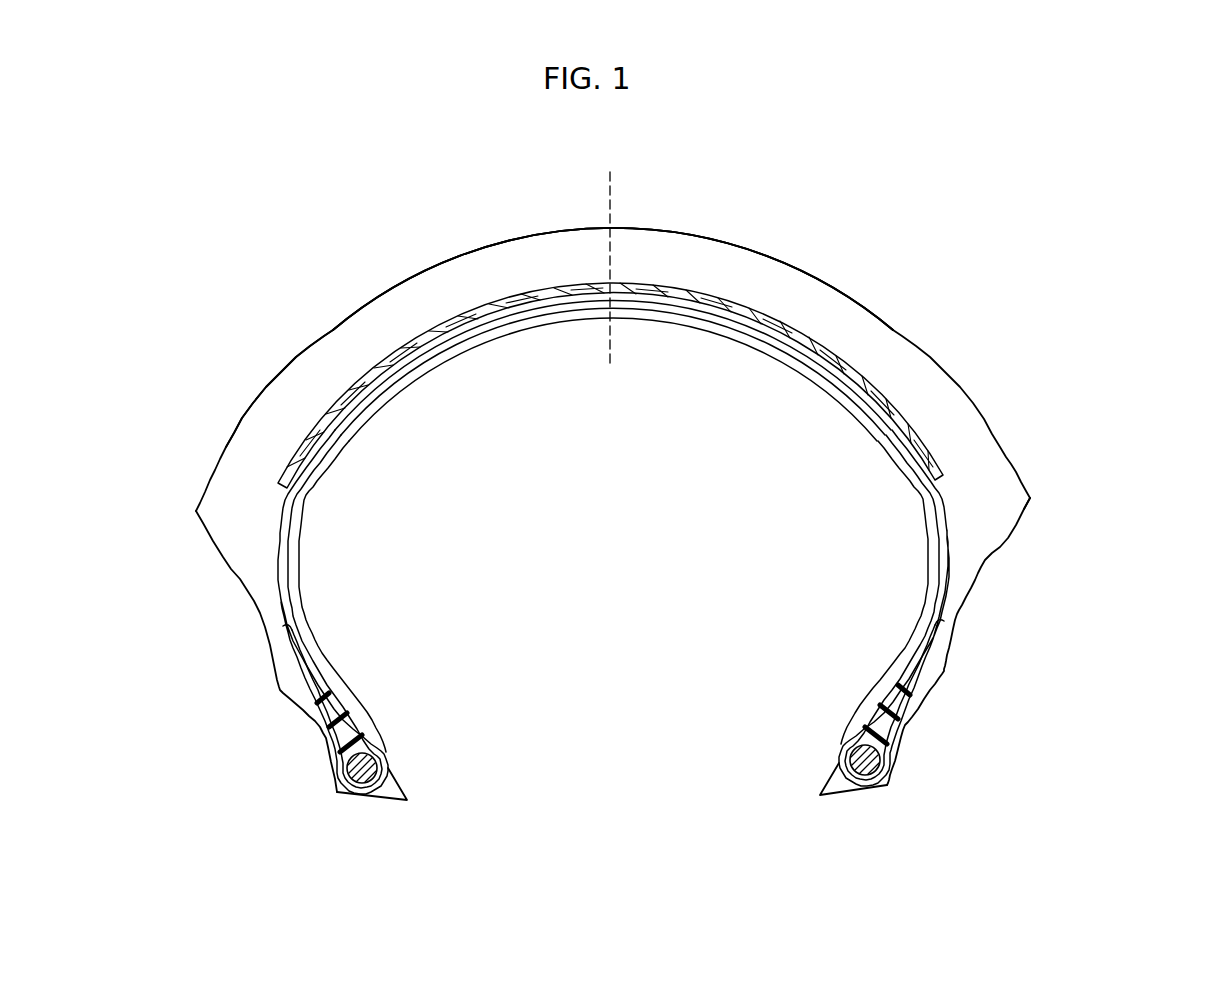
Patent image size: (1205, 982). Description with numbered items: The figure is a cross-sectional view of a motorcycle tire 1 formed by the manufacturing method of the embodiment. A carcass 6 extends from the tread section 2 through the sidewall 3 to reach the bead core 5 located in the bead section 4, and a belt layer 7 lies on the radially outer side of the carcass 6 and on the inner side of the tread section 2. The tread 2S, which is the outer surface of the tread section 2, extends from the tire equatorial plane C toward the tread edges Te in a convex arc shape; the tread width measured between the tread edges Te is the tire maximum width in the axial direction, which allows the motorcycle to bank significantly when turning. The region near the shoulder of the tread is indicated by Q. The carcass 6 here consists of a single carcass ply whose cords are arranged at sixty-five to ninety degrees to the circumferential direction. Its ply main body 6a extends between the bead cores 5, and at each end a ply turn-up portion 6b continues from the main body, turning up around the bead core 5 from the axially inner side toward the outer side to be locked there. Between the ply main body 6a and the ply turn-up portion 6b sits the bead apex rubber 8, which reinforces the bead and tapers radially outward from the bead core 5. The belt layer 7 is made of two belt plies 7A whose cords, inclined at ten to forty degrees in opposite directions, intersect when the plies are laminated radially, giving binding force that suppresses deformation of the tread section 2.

The motorcycle tire 1 is at (1021, 307).
The tread section 2 is at (806, 270).
The tread 2S is at (737, 244).
The sidewall 3 is at (978, 570).
The bead section 4 is at (802, 722).
The bead core 5 is at (852, 769).
The carcass 6 is at (780, 520).
The ply main body 6a is at (946, 530).
The ply turn-up portion 6b is at (932, 598).
The belt layer 7 is at (497, 478).
The belt ply 7A is at (478, 455).
The bead apex rubber 8 is at (862, 737).
The tire equatorial plane C is at (606, 255).
The tread portion outer surface region Q is at (250, 406).
The tread edge Te is at (1031, 498).